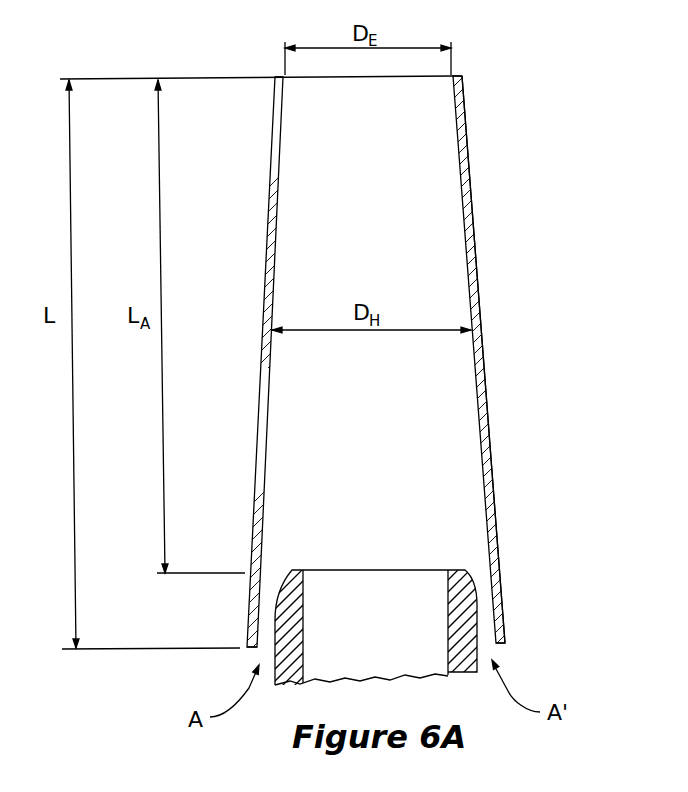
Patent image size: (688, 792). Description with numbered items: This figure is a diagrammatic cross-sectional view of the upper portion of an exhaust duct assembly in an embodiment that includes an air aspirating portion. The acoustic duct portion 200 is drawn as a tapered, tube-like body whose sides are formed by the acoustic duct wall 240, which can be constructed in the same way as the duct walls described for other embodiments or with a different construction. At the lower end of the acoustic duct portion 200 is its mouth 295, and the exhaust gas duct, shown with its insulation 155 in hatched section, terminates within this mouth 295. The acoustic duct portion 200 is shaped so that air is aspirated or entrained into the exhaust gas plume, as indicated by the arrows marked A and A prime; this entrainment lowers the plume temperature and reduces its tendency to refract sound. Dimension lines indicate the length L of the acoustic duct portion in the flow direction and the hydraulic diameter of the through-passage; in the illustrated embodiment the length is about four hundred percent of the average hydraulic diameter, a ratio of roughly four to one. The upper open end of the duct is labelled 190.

The upper open end of tube 190 is at (405, 67).
The acoustic duct portion 200 is at (478, 298).
The acoustic duct wall 240 is at (482, 441).
The insulation 155 is at (469, 610).
The mouth 295 is at (492, 643).